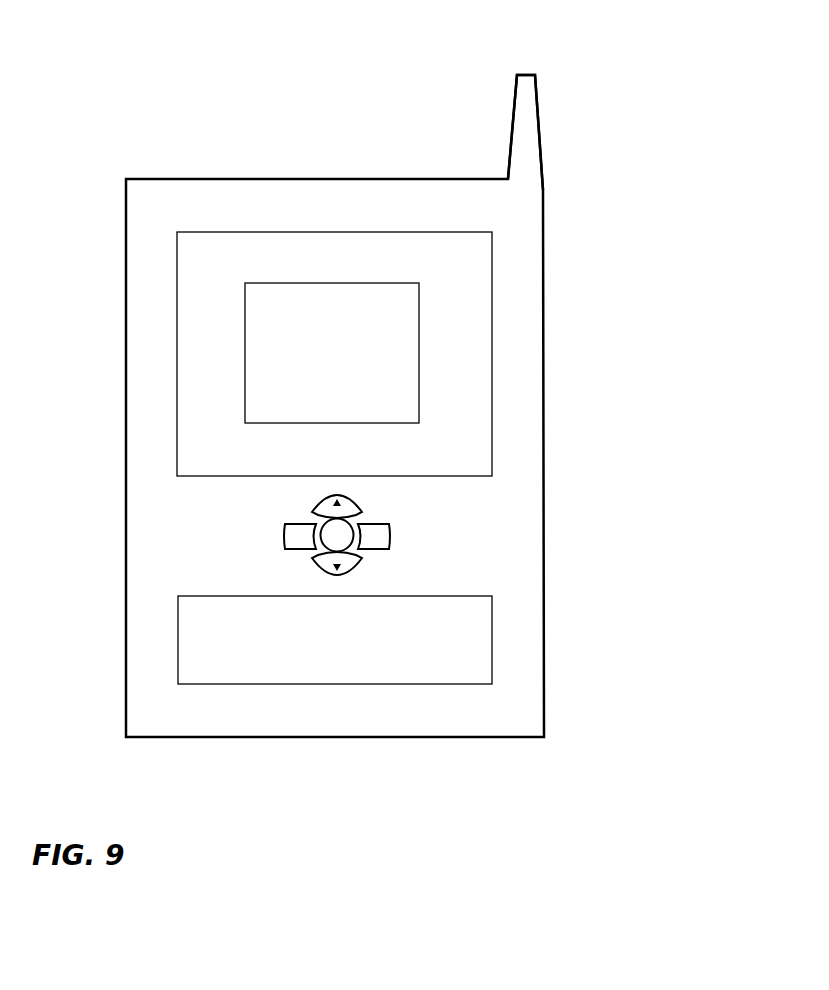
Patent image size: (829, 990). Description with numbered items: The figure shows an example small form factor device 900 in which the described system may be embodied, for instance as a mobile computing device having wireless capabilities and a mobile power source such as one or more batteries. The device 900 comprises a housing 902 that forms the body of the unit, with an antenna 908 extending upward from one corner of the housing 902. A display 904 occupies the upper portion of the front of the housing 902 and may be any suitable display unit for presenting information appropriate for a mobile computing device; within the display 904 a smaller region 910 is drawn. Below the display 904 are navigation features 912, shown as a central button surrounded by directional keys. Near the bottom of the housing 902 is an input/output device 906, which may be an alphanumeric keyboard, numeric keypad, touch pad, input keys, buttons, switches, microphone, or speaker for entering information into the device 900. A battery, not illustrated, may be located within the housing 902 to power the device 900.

The small form factor device 900 is at (138, 84).
The housing 902 is at (545, 458).
The display 904 is at (493, 250).
The input/output (I/O) device 906 is at (493, 632).
The antenna 908 is at (510, 120).
The display window 910 is at (423, 370).
The navigation features 912 is at (409, 528).